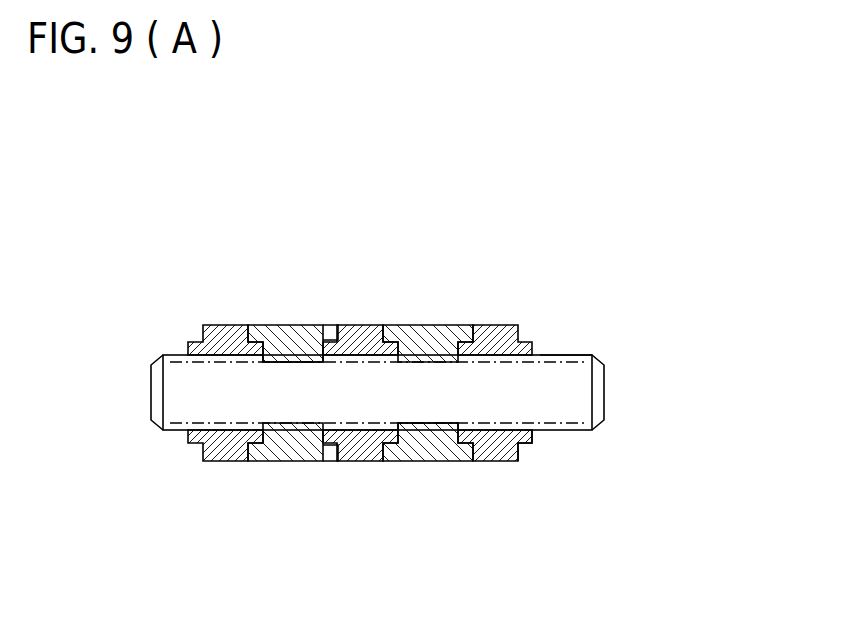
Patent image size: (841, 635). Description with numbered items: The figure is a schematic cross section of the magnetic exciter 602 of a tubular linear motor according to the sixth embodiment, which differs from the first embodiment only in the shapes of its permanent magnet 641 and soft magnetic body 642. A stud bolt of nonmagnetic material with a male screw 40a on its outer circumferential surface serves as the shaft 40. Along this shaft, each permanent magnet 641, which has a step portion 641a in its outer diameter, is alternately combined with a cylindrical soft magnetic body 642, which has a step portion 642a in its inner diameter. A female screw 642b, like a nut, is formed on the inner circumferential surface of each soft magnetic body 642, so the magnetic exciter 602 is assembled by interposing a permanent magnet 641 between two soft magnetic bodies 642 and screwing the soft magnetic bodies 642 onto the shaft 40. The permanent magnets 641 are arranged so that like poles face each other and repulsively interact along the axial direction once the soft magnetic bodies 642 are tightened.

The magnetic exciter 602 is at (167, 131).
The shaft 40 is at (582, 393).
The male screw 40a is at (573, 355).
The permanent magnet 641 is at (222, 462).
The step portion 641a is at (525, 448).
The soft magnetic body 642 is at (288, 325).
The step portion 642a is at (460, 433).
The female screw 642b is at (290, 362).